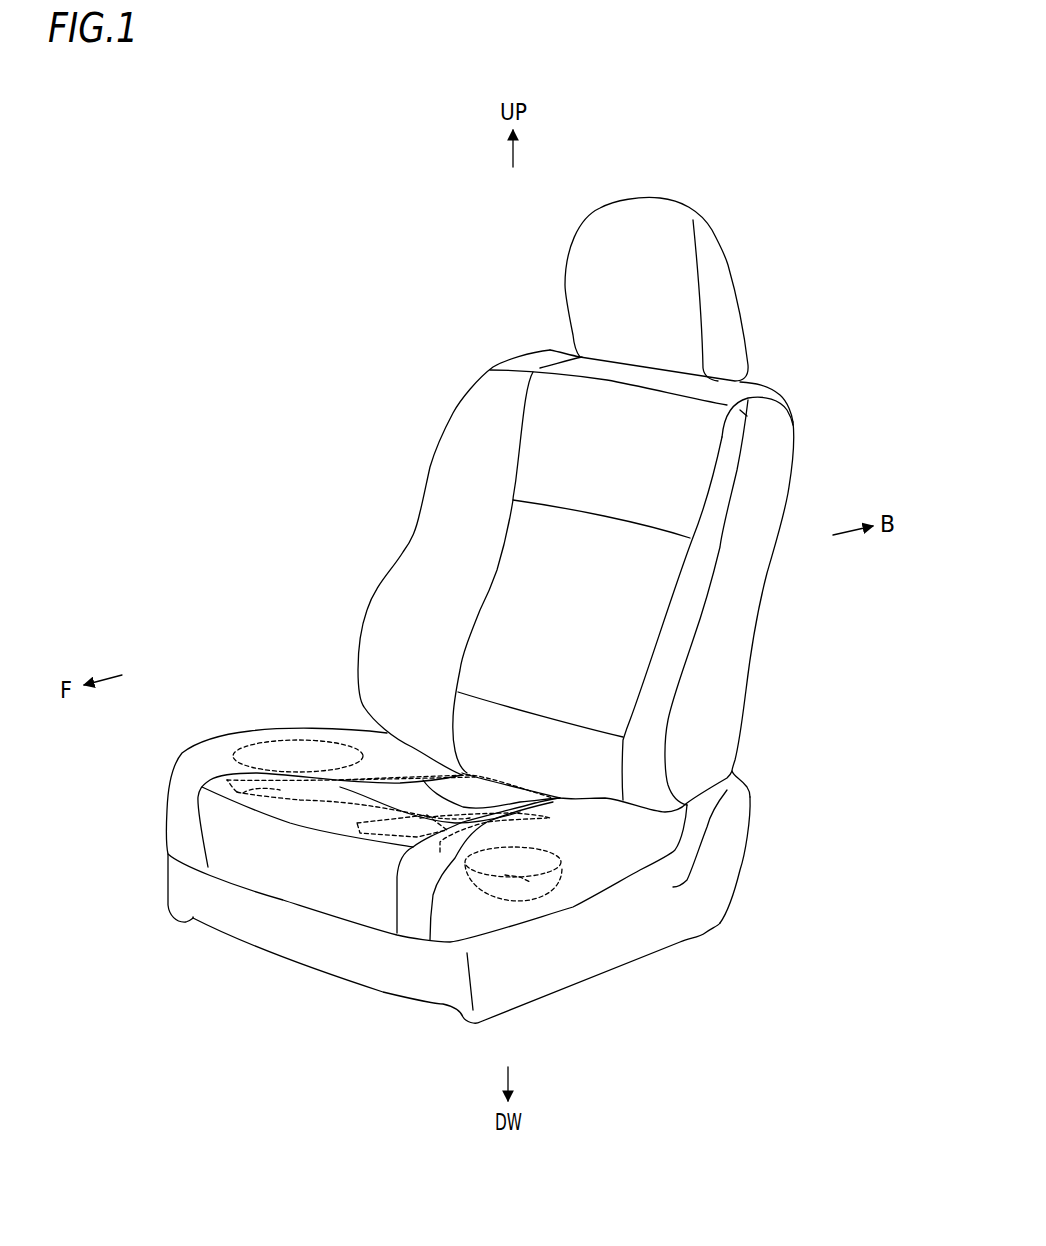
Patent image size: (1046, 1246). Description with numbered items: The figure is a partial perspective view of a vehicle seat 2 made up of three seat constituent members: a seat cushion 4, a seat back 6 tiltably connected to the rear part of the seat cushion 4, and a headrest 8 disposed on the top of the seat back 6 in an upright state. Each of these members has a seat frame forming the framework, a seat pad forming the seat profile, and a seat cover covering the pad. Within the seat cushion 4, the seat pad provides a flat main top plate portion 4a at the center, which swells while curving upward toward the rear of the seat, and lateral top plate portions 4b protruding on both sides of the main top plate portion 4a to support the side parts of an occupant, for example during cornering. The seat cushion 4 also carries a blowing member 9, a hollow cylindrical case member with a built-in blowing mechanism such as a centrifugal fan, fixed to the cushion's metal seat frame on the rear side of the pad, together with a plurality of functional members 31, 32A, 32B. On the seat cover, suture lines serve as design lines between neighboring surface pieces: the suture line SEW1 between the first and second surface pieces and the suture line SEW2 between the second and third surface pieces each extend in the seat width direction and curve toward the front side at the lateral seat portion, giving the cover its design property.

The vehicle seat 2 is at (775, 182).
The headrest 8 is at (590, 275).
The seat back 6 is at (453, 475).
The seat cushion 4 is at (227, 740).
The main top plate portion 4a is at (350, 829).
The lateral top plate portions 4b is at (223, 767).
The functional member 31 is at (243, 790).
The functional member 32A is at (297, 757).
The functional member 32B is at (547, 815).
The blowing member 9 is at (520, 877).
The suture line SEW1 is at (389, 805).
The suture line SEW2 is at (465, 803).